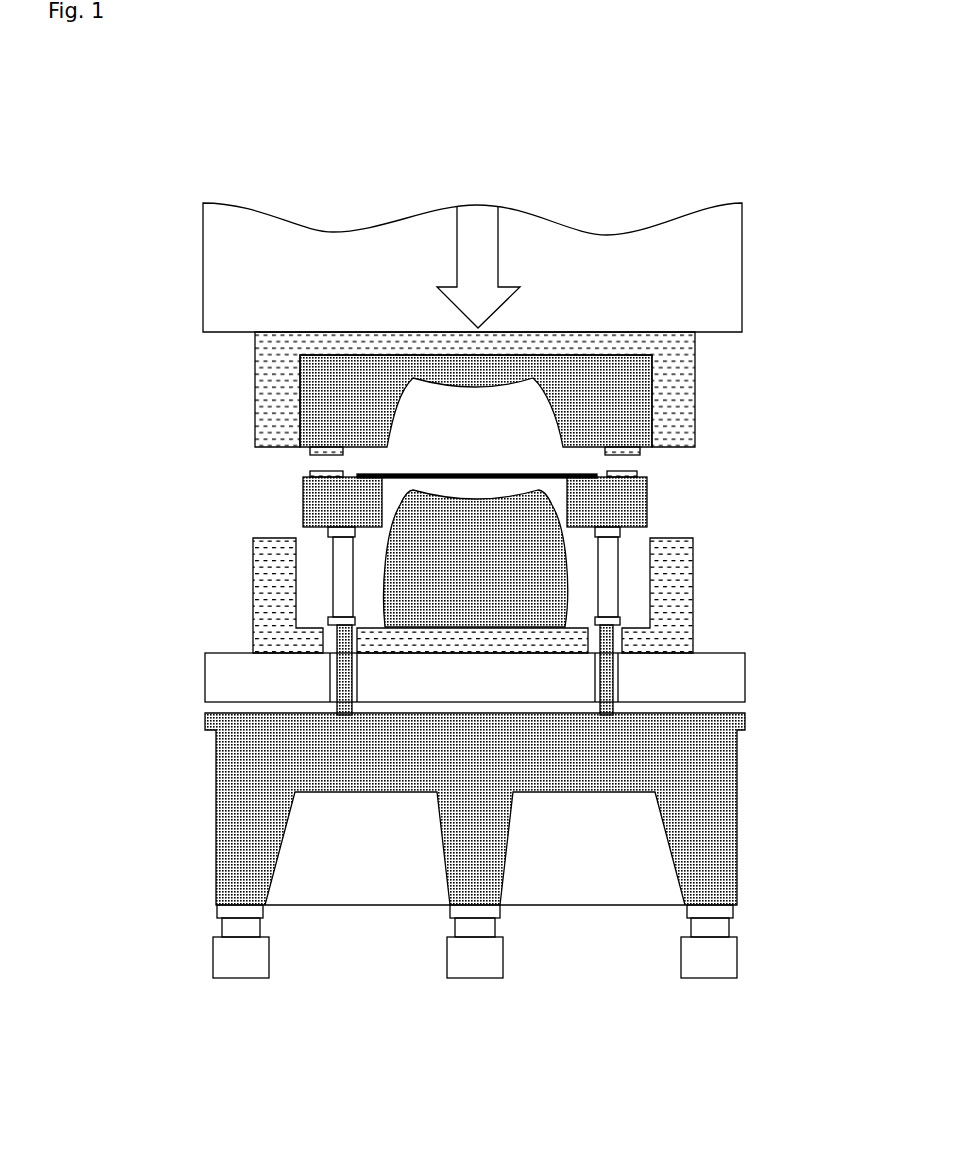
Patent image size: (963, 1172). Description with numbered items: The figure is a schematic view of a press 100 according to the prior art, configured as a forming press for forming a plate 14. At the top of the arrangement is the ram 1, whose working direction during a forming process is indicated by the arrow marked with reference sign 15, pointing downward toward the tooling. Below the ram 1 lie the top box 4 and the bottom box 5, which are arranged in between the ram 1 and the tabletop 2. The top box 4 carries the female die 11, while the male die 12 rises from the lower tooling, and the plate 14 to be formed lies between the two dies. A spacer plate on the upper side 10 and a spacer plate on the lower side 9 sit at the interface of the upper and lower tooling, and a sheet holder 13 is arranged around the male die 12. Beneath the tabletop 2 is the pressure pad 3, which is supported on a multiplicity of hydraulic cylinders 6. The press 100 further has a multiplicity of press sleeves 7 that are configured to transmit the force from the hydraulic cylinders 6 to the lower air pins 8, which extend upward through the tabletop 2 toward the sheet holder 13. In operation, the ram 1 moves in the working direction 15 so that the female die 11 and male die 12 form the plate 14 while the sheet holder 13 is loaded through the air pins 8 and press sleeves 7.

The press 100 is at (125, 135).
The ram 1 is at (715, 305).
The tabletop 2 is at (727, 683).
The pressure pad 3 is at (700, 768).
The top box 4 is at (685, 397).
The bottom box 5 is at (680, 573).
The hydraulic cylinders 6 is at (250, 948).
The press sleeves 7 is at (345, 652).
The lower air pins 8 is at (343, 573).
The spacer plate on the lower side 9 is at (313, 475).
The spacer plate on the upper side 10 is at (313, 455).
The female die 11 is at (327, 390).
The male die 12 is at (565, 593).
The sheet holder 13 is at (323, 507).
The plate 14 is at (510, 475).
The working direction of the ram 15 is at (500, 258).